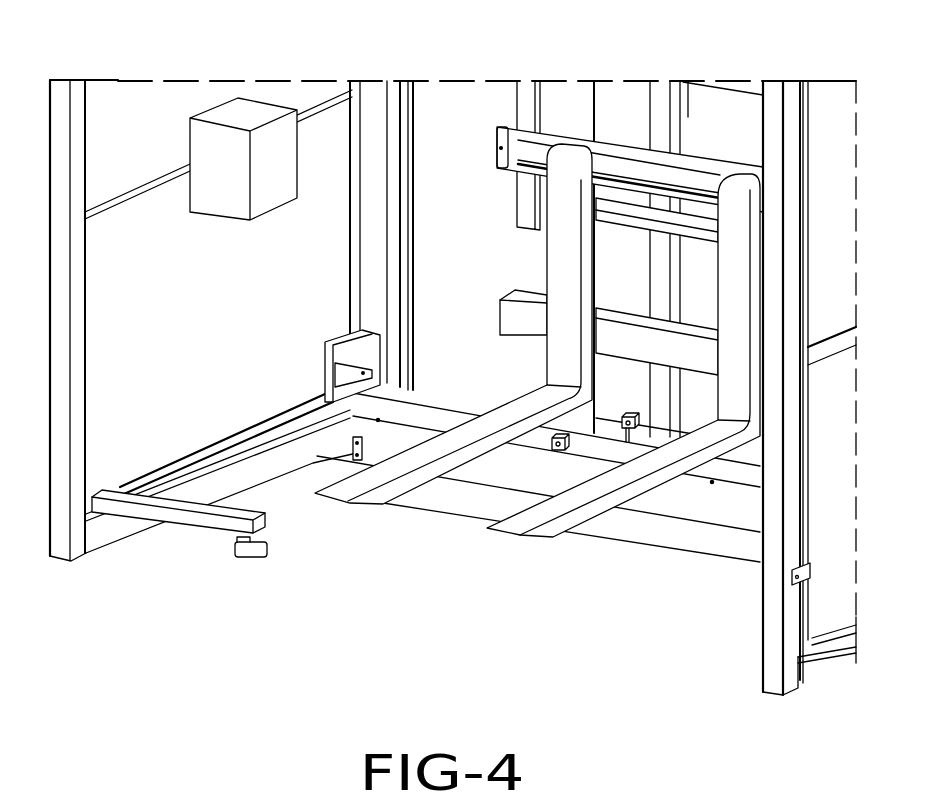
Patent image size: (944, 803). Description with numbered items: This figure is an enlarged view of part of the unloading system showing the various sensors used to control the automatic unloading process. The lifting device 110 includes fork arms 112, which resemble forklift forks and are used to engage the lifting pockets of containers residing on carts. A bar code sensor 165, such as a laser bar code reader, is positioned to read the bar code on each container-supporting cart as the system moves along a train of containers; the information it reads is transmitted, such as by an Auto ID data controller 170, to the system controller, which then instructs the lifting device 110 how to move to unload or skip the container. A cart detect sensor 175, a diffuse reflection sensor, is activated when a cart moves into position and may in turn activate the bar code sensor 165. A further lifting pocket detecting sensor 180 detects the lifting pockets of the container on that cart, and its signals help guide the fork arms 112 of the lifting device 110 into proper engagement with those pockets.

The lifting device 110 is at (697, 154).
The fork arms 112 is at (375, 477).
The bar code sensor 165 is at (250, 553).
The Auto ID data controller 170 is at (273, 147).
The cart detect sensor 175 is at (551, 444).
The lifting pocket detecting sensor 180 is at (625, 430).